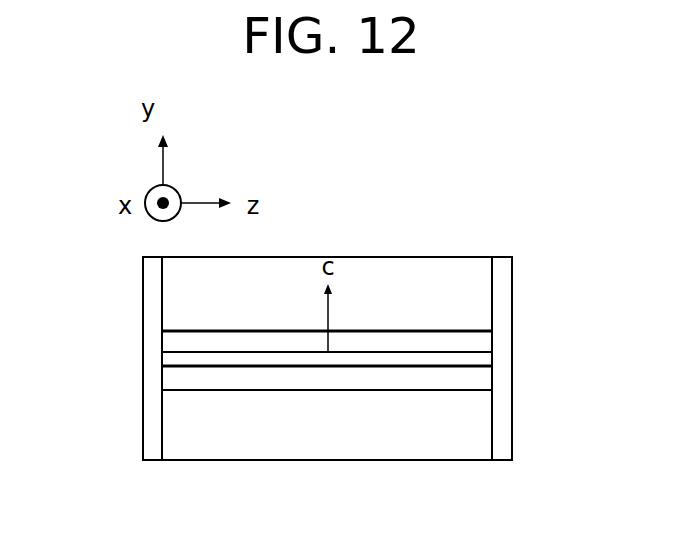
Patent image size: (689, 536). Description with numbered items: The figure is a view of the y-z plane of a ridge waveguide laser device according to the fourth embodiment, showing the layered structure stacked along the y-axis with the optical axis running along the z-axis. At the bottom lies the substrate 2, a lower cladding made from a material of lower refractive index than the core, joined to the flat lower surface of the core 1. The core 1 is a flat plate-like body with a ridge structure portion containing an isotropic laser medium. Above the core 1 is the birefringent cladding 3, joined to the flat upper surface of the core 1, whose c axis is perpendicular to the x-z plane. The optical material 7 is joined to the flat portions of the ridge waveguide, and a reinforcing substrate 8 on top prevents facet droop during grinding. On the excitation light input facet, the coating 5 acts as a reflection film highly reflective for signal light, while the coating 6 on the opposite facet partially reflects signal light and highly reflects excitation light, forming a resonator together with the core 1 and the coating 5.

The core 1 is at (480, 374).
The substrate 2 is at (480, 423).
The cladding 3 is at (480, 358).
The coating 5 is at (155, 399).
The coating 6 is at (502, 450).
The optical material 7 is at (480, 340).
The substrate 8 is at (480, 290).